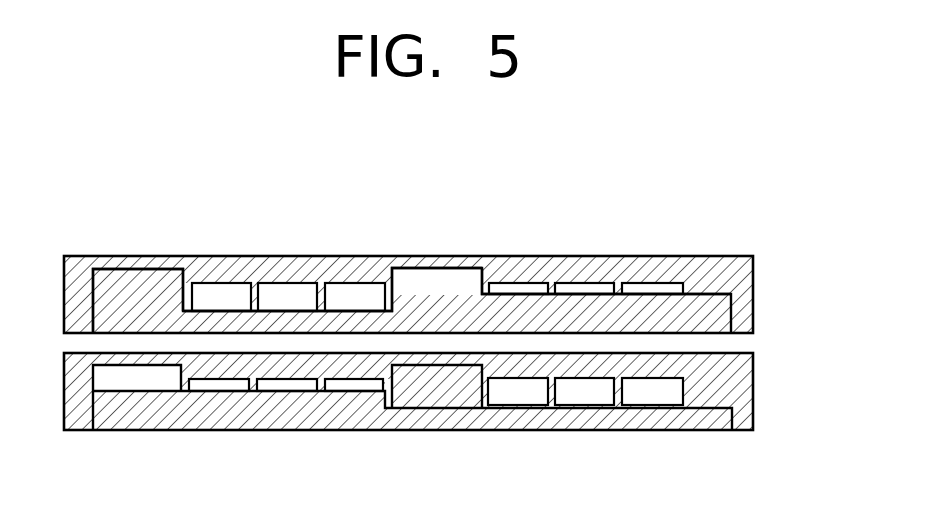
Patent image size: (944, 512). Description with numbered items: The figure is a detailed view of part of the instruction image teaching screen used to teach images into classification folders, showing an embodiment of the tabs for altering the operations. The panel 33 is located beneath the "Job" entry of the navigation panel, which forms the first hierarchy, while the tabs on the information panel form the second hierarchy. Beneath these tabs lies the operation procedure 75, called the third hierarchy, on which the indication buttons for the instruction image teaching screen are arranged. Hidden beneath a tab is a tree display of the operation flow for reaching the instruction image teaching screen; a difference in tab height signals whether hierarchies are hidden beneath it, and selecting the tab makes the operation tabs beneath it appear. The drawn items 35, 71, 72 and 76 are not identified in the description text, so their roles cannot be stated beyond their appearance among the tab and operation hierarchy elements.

The panel 33 is at (707, 288).
The cavity 35 is at (354, 322).
The projection 71 is at (131, 290).
The recess 72 is at (225, 297).
The operation procedure 75 is at (753, 295).
The second wafer 76 is at (753, 390).